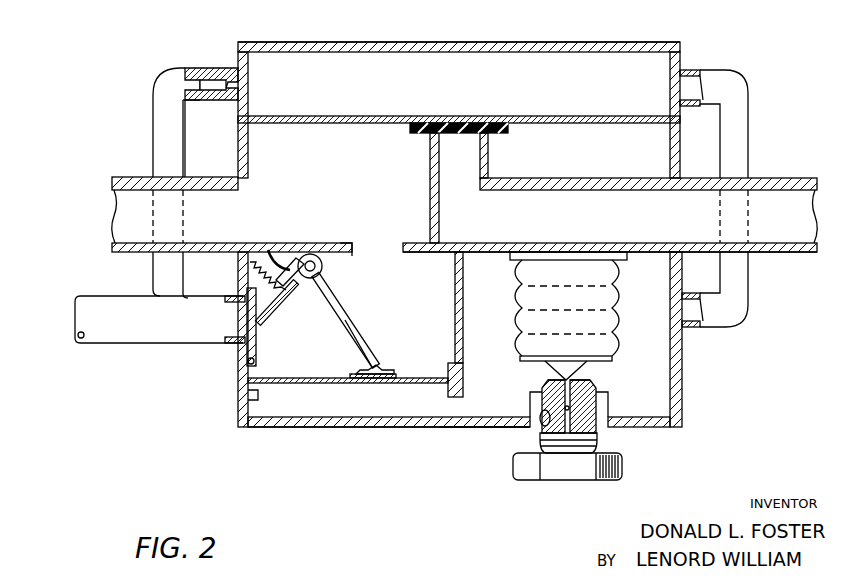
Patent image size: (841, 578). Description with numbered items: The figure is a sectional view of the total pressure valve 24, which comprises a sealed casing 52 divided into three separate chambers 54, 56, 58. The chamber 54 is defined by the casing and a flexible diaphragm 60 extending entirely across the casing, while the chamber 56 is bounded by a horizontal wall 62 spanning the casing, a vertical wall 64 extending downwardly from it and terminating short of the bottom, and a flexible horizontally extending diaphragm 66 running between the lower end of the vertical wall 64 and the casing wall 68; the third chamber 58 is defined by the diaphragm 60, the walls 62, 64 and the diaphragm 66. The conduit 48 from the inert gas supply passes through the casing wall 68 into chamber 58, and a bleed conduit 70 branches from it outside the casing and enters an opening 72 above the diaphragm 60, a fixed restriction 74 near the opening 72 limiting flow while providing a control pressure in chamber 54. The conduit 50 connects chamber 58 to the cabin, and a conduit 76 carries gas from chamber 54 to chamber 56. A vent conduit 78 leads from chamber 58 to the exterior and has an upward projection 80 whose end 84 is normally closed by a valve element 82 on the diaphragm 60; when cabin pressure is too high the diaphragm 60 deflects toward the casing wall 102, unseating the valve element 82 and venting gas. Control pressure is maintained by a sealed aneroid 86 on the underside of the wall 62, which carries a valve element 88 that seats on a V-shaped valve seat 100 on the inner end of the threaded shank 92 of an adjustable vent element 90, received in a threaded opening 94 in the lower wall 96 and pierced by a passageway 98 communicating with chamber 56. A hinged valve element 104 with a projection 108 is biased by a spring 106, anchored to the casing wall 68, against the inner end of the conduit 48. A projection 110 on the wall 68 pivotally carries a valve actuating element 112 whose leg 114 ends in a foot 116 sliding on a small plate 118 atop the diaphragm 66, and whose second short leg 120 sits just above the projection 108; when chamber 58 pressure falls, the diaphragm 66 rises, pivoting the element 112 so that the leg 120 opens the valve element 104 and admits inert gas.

The total pressure valve 24 is at (302, 436).
The conduit 48 is at (118, 343).
The conduit 50 is at (124, 252).
The sealed casing 52 is at (422, 42).
The chamber 54 is at (612, 63).
The chamber 56 is at (663, 386).
The third chamber 58 is at (433, 370).
The flexible diaphragm 60 is at (355, 116).
The horizontal wall 62 is at (477, 258).
The vertical wall 64 is at (455, 292).
The flexible horizontally extending diaphragm 66 is at (296, 383).
The casing wall 68 is at (238, 407).
The bleed conduit 70 is at (160, 122).
The opening 72 is at (248, 77).
The fixed restriction 74 is at (214, 103).
The conduit 76 is at (740, 128).
The vent conduit 78 is at (794, 254).
The projection 80 is at (430, 186).
The valve element 82 is at (451, 123).
The end 84 is at (491, 135).
The sealed aneroid 86 is at (600, 302).
The valve element 88 is at (574, 368).
The adjustable vent element 90 is at (634, 476).
The threaded shank 92 is at (600, 443).
The threaded opening 94 is at (543, 430).
The lower wall 96 is at (450, 428).
The passageway 98 is at (570, 408).
The V-shaped valve seat 100 is at (551, 377).
The casing wall 102 is at (511, 42).
The hinged valve element 104 is at (257, 346).
The spring 106 is at (248, 272).
The projection 108 is at (274, 313).
The projection 110 is at (341, 243).
The valve actuating element 112 is at (340, 300).
The leg 114 is at (356, 333).
The foot 116 is at (387, 372).
The small plate 118 is at (352, 366).
The second short leg 120 is at (264, 248).